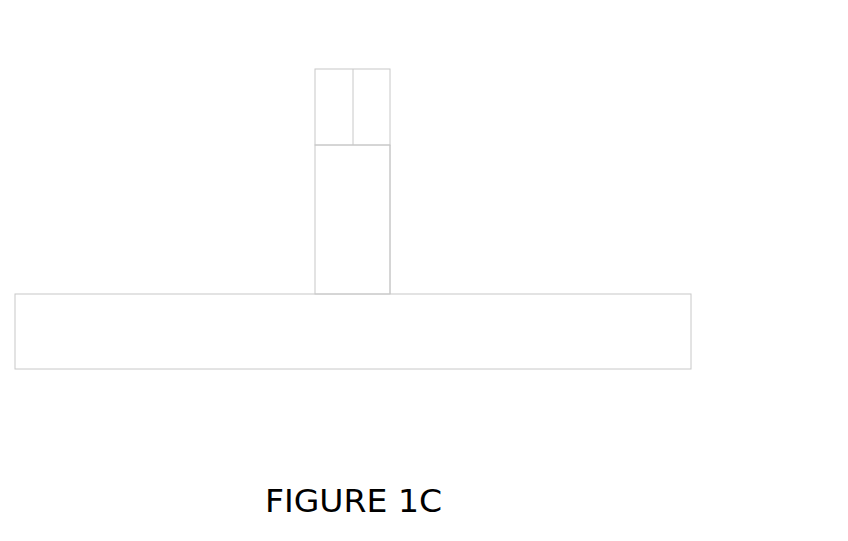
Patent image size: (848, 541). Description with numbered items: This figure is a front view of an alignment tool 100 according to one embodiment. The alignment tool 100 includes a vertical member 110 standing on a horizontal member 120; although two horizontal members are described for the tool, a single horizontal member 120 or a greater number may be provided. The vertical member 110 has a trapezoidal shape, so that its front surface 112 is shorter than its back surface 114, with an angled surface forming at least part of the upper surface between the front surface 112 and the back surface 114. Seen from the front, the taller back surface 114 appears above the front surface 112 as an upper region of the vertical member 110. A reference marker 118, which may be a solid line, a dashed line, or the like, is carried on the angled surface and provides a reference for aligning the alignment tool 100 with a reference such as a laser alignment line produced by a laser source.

The alignment tool 100 is at (410, 252).
The vertical member 110 is at (352, 219).
The front surface 112 is at (392, 184).
The back surface 114 is at (392, 109).
The reference marker 118 is at (354, 68).
The horizontal member 120 is at (353, 331).